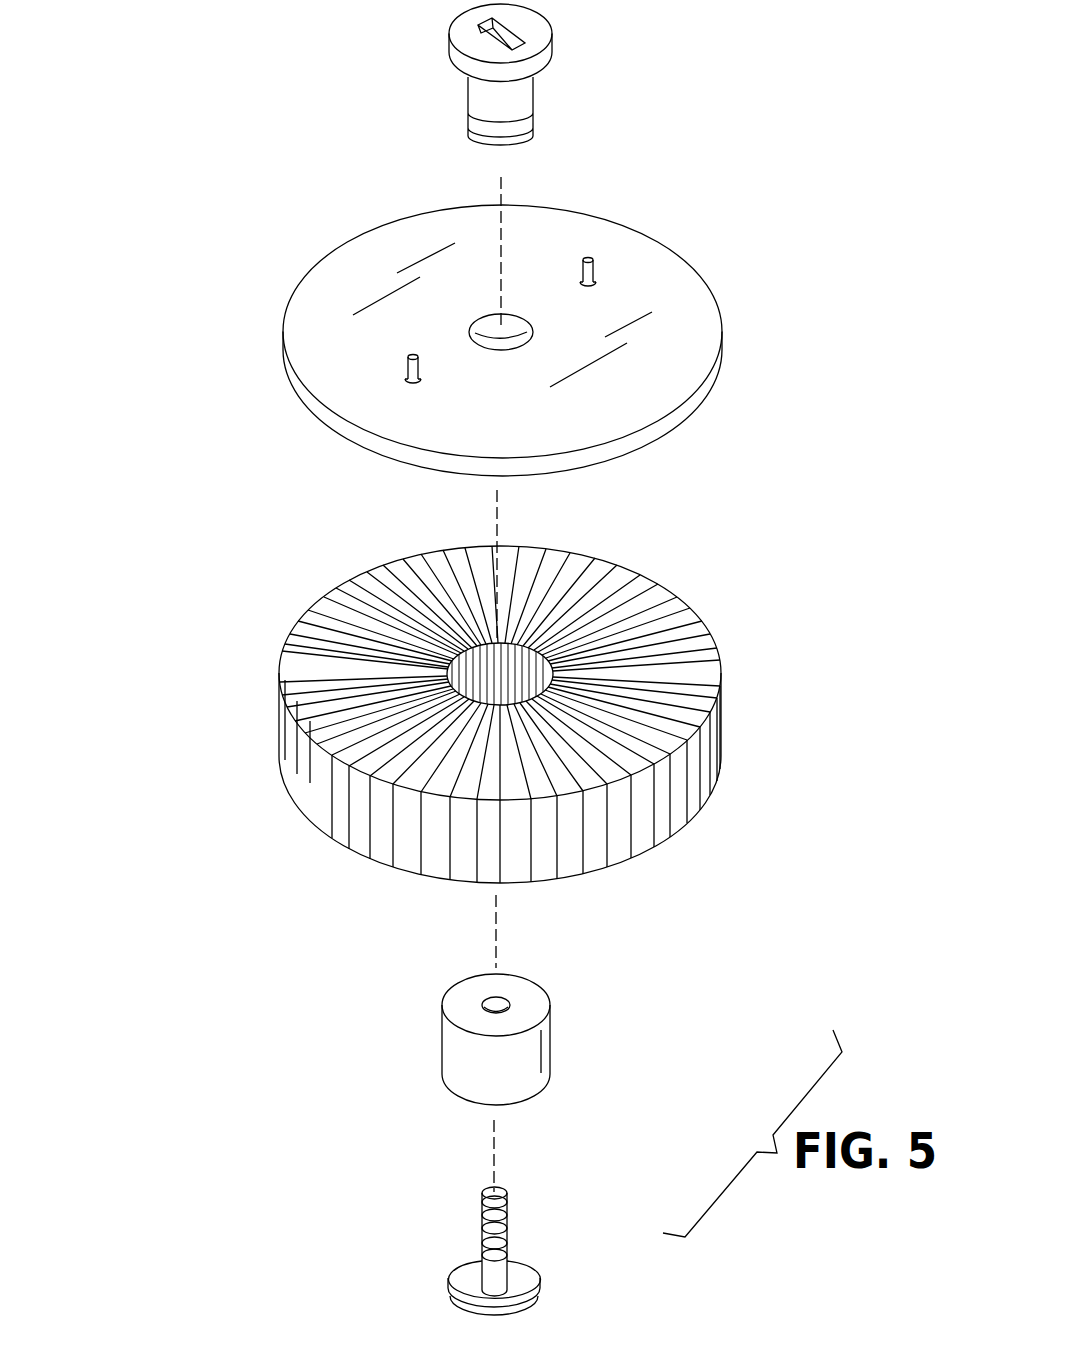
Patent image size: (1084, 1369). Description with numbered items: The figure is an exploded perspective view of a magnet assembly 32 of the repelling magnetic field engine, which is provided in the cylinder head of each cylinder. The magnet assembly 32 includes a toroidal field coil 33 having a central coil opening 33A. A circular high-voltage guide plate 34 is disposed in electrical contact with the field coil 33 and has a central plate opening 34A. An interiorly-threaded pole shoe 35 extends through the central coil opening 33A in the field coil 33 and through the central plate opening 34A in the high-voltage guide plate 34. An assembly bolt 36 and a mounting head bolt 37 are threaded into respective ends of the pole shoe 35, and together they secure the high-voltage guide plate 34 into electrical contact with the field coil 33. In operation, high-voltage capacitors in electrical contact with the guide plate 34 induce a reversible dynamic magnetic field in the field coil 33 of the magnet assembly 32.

The magnet assembly 32 is at (237, 127).
The toroidal field coil 33 is at (279, 705).
The central coil opening 33A is at (517, 675).
The high-voltage guide plate 34 is at (327, 347).
The central plate opening 34A is at (511, 337).
The pole shoe 35 is at (442, 1057).
The assembly bolt 36 is at (482, 1227).
The mounting head bolt 37 is at (470, 103).